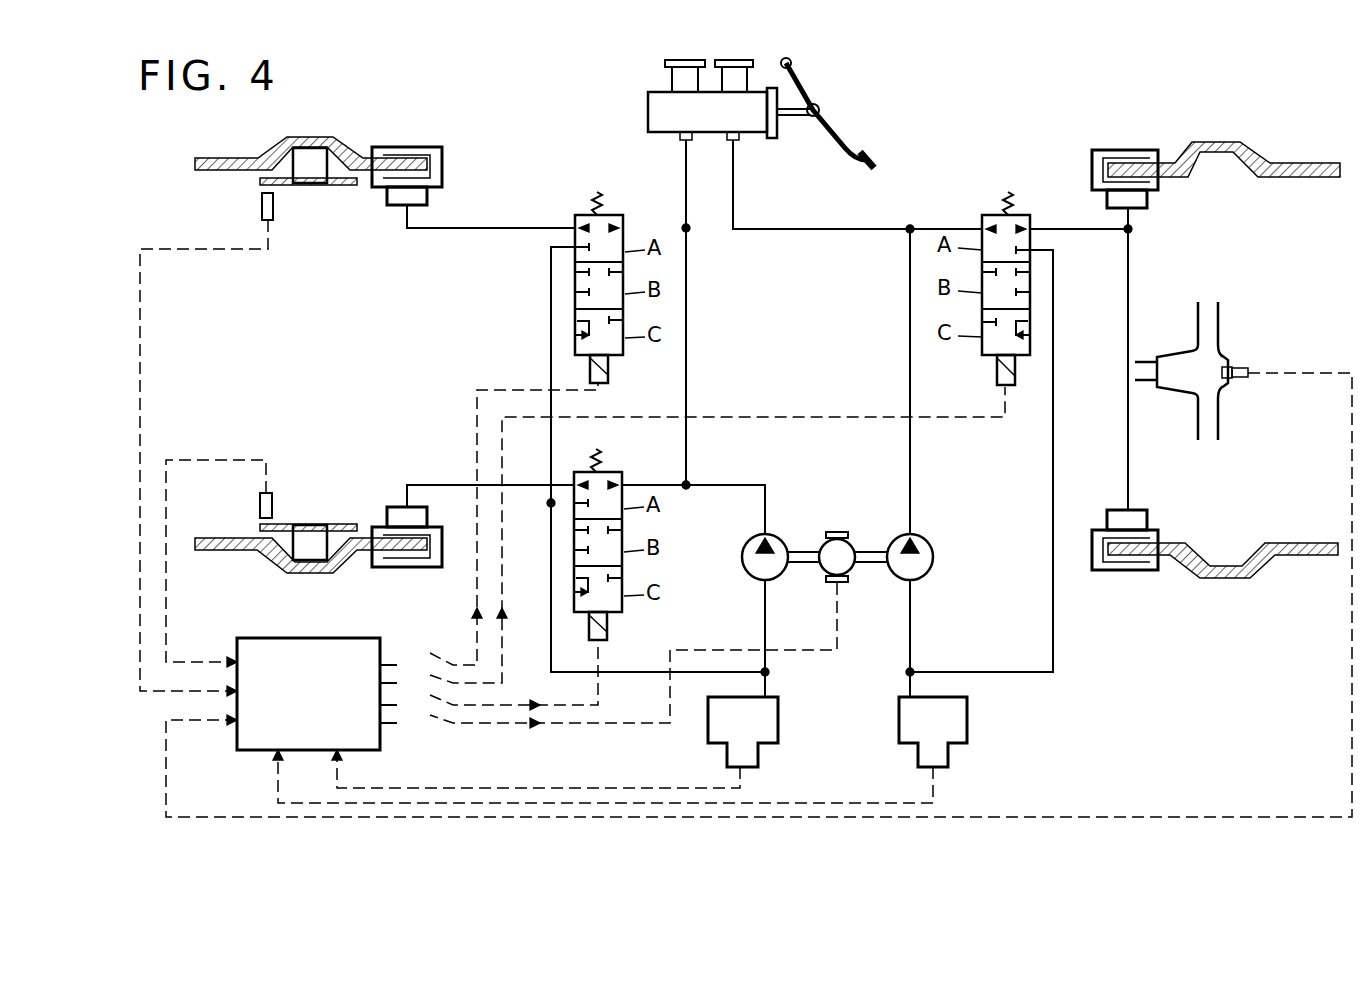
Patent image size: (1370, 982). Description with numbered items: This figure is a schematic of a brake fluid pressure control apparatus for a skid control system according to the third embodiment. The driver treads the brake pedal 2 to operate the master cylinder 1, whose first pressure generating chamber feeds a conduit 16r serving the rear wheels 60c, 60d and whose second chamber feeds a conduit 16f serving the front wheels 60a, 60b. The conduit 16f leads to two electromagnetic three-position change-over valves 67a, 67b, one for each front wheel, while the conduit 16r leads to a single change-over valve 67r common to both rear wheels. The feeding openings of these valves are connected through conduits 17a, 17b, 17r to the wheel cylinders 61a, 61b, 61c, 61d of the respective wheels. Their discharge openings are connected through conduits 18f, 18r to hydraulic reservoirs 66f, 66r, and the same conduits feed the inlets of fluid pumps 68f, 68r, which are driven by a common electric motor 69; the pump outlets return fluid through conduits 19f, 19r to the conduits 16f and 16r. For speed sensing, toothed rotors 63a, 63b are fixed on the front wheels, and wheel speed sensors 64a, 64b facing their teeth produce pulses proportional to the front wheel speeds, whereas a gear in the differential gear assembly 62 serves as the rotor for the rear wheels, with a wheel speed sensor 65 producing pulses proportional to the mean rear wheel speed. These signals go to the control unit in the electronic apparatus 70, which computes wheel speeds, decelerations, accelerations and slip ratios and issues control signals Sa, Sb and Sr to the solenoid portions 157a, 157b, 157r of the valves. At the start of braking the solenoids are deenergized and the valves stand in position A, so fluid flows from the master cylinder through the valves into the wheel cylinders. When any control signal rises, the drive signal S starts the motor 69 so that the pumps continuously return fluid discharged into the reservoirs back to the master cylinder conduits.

The master cylinder 1 is at (634, 76).
The brake pedal 2 is at (830, 127).
The conduit 16f is at (686, 170).
The conduit 16r is at (733, 170).
The conduit 17a is at (520, 227).
The conduit 17b is at (517, 485).
The conduit 17r is at (1040, 228).
The conduit 18f is at (551, 300).
The conduit 18r is at (1053, 297).
The conduit 19f is at (713, 485).
The conduit 19r is at (910, 384).
The front wheel 60a is at (315, 131).
The front wheel 60b is at (312, 582).
The rear wheel 60c is at (1223, 136).
The rear wheel 60d is at (1230, 584).
The wheel cylinder 61a is at (430, 195).
The wheel cylinder 61b is at (427, 518).
The wheel cylinder 61c is at (1107, 206).
The wheel cylinder 61d is at (1107, 525).
The differential gear assembly 62 is at (1205, 370).
The toothed rotor 63a is at (340, 185).
The toothed rotor 63b is at (342, 525).
The wheel speed sensor 64a is at (262, 207).
The wheel speed sensor 64b is at (260, 506).
The wheel speed sensor 65 is at (1236, 368).
The hydraulic reservoir 66f is at (778, 705).
The hydraulic reservoir 66r is at (899, 710).
The electromagnetic three-position change-over valve 67a is at (632, 212).
The electromagnetic three-position change-over valve 67b is at (630, 469).
The electromagnetic three-position change-over valve 67r is at (980, 204).
The fluid pump 68f is at (753, 538).
The fluid pump 68r is at (919, 540).
The electric motor 69 is at (838, 532).
The electronic apparatus 70 is at (283, 640).
The solenoid portion 157a is at (608, 380).
The solenoid portion 157b is at (607, 636).
The solenoid portion 157r is at (997, 380).